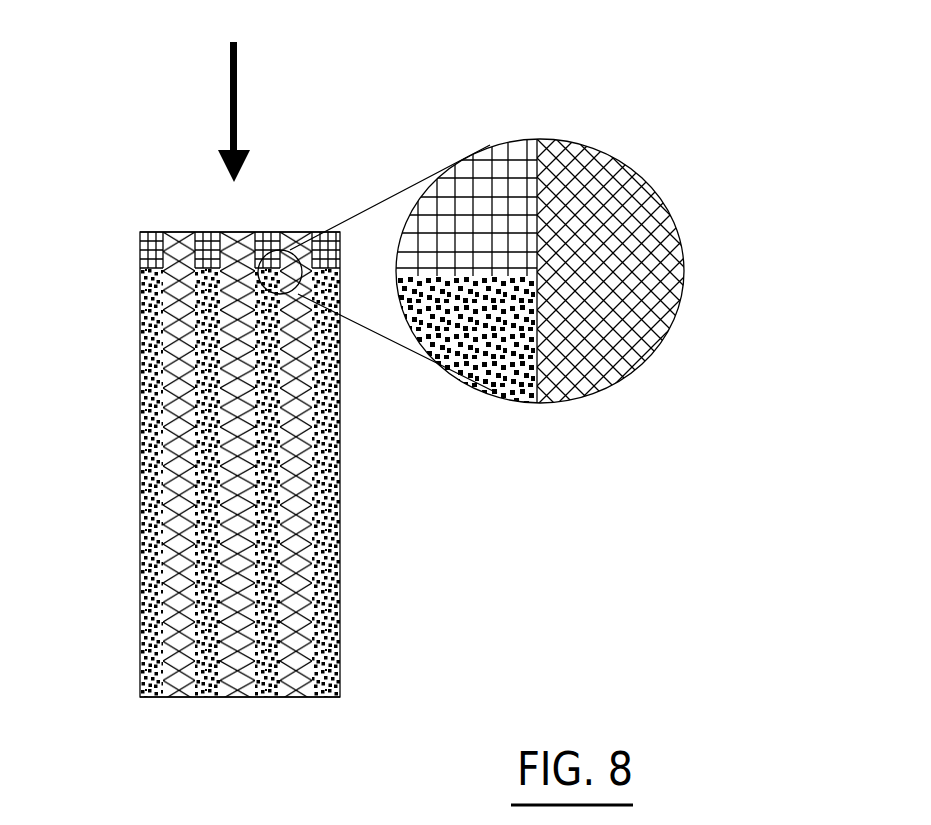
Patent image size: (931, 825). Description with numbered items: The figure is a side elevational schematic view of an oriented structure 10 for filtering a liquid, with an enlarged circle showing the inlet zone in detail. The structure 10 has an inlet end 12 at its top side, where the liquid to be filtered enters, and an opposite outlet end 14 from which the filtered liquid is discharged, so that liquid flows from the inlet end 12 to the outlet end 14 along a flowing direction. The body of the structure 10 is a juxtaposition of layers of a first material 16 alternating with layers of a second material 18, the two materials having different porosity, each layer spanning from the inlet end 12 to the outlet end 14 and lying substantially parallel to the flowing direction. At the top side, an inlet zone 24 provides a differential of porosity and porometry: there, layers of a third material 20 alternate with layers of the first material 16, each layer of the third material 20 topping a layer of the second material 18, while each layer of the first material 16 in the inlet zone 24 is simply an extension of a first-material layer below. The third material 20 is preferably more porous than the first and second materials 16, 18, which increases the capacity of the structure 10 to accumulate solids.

The oriented structure 10 is at (128, 208).
The inlet end 12 is at (271, 213).
The outlet end 14 is at (183, 702).
The first material 16 is at (170, 515).
The second material 18 is at (152, 588).
The third material 20 is at (200, 232).
The inlet zone 24 is at (117, 225).